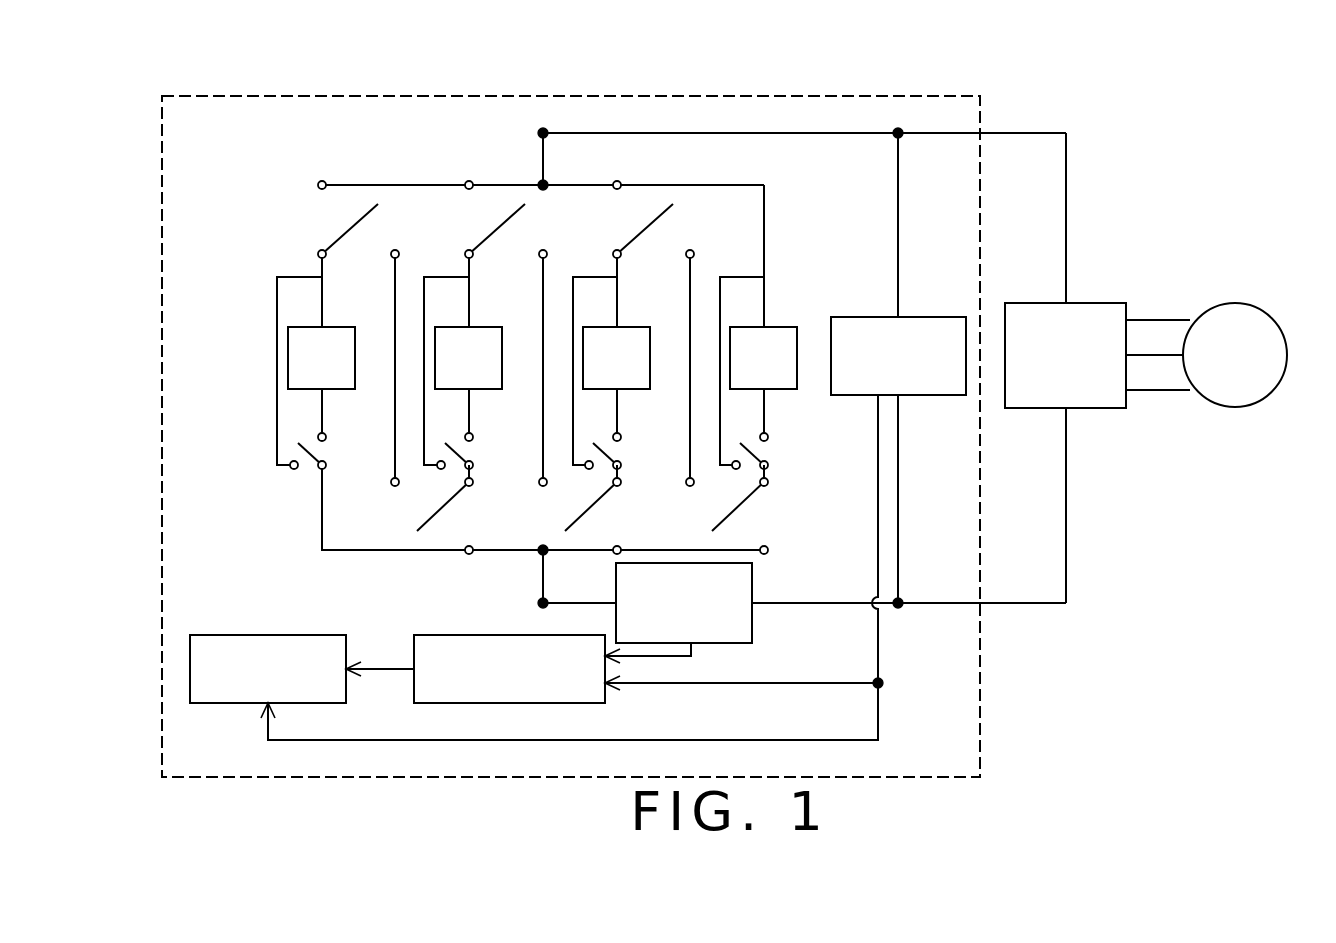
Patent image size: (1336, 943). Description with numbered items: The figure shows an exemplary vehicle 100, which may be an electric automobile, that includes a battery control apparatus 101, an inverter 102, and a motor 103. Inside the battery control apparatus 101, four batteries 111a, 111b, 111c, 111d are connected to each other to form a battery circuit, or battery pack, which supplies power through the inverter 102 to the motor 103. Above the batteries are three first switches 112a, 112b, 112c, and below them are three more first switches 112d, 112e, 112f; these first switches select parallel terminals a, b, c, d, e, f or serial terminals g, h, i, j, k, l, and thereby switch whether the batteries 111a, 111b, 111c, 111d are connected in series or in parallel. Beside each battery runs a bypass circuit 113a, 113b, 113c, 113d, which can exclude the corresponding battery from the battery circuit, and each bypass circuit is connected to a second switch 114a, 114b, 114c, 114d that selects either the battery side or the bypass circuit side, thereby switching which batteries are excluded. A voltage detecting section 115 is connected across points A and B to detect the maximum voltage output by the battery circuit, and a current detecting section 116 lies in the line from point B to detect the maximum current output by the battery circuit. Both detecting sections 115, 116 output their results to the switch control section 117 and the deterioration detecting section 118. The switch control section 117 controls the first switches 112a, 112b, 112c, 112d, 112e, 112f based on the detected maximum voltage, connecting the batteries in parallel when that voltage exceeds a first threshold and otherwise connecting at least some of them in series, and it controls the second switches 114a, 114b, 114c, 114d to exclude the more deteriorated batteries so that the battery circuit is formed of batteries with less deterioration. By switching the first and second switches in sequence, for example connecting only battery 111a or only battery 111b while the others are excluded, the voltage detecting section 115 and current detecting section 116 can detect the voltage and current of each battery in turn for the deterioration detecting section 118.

The vehicle 100 is at (1148, 68).
The battery control apparatus 101 is at (981, 109).
The inverter 102 is at (1108, 303).
The motor 103 is at (1258, 306).
The battery 111a is at (357, 318).
The battery 111b is at (504, 318).
The battery 111c is at (652, 318).
The battery 111d is at (799, 318).
The first switch 112a is at (356, 228).
The first switch 112b is at (503, 228).
The first switch 112c is at (651, 228).
The first switch 112d is at (439, 506).
The first switch 112e is at (587, 506).
The first switch 112f is at (734, 506).
The bypass circuit 113a is at (287, 277).
The bypass circuit 113b is at (437, 277).
The bypass circuit 113c is at (584, 277).
The bypass circuit 113d is at (715, 277).
The second switch 114a is at (308, 450).
The second switch 114b is at (455, 450).
The second switch 114c is at (603, 450).
The second switch 114d is at (750, 450).
The voltage detecting section 115 is at (922, 316).
The current detecting section 116 is at (752, 614).
The switch control section 117 is at (250, 635).
The deterioration detecting section 118 is at (510, 635).